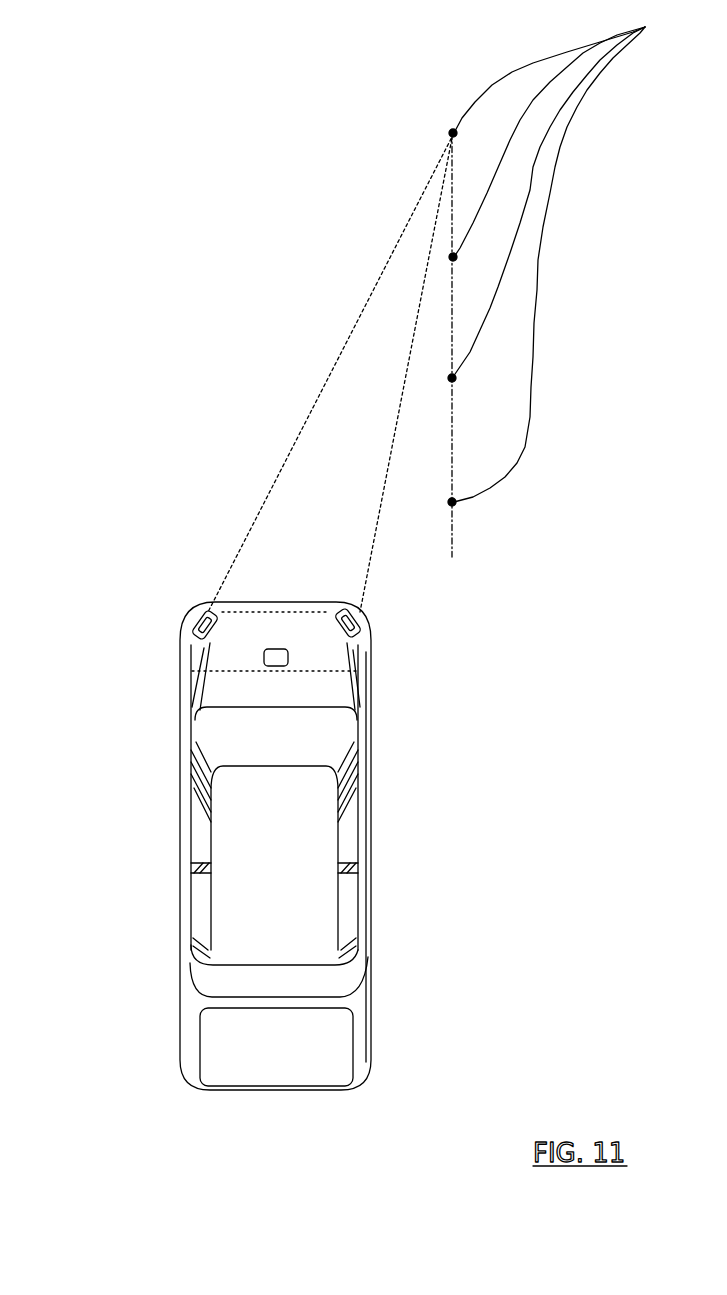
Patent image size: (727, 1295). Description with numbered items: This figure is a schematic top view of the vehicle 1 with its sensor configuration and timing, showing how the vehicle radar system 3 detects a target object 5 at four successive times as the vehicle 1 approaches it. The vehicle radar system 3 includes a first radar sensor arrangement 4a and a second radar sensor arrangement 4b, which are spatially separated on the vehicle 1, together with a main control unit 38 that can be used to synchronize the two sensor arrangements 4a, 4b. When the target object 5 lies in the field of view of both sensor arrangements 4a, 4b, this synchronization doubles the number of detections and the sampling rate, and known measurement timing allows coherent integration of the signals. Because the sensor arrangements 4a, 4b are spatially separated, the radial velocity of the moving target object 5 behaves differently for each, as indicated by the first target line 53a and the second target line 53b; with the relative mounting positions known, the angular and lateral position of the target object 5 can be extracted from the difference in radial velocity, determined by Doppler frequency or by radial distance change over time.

The vehicle 1 is at (263, 822).
The vehicle radar system 3 is at (245, 671).
The main control unit 38 is at (287, 668).
The first radar sensor arrangement 4a is at (203, 617).
The second radar sensor arrangement 4b is at (373, 635).
The target object 5 is at (645, 27).
The first target line 53a is at (253, 518).
The second target line 53b is at (373, 553).